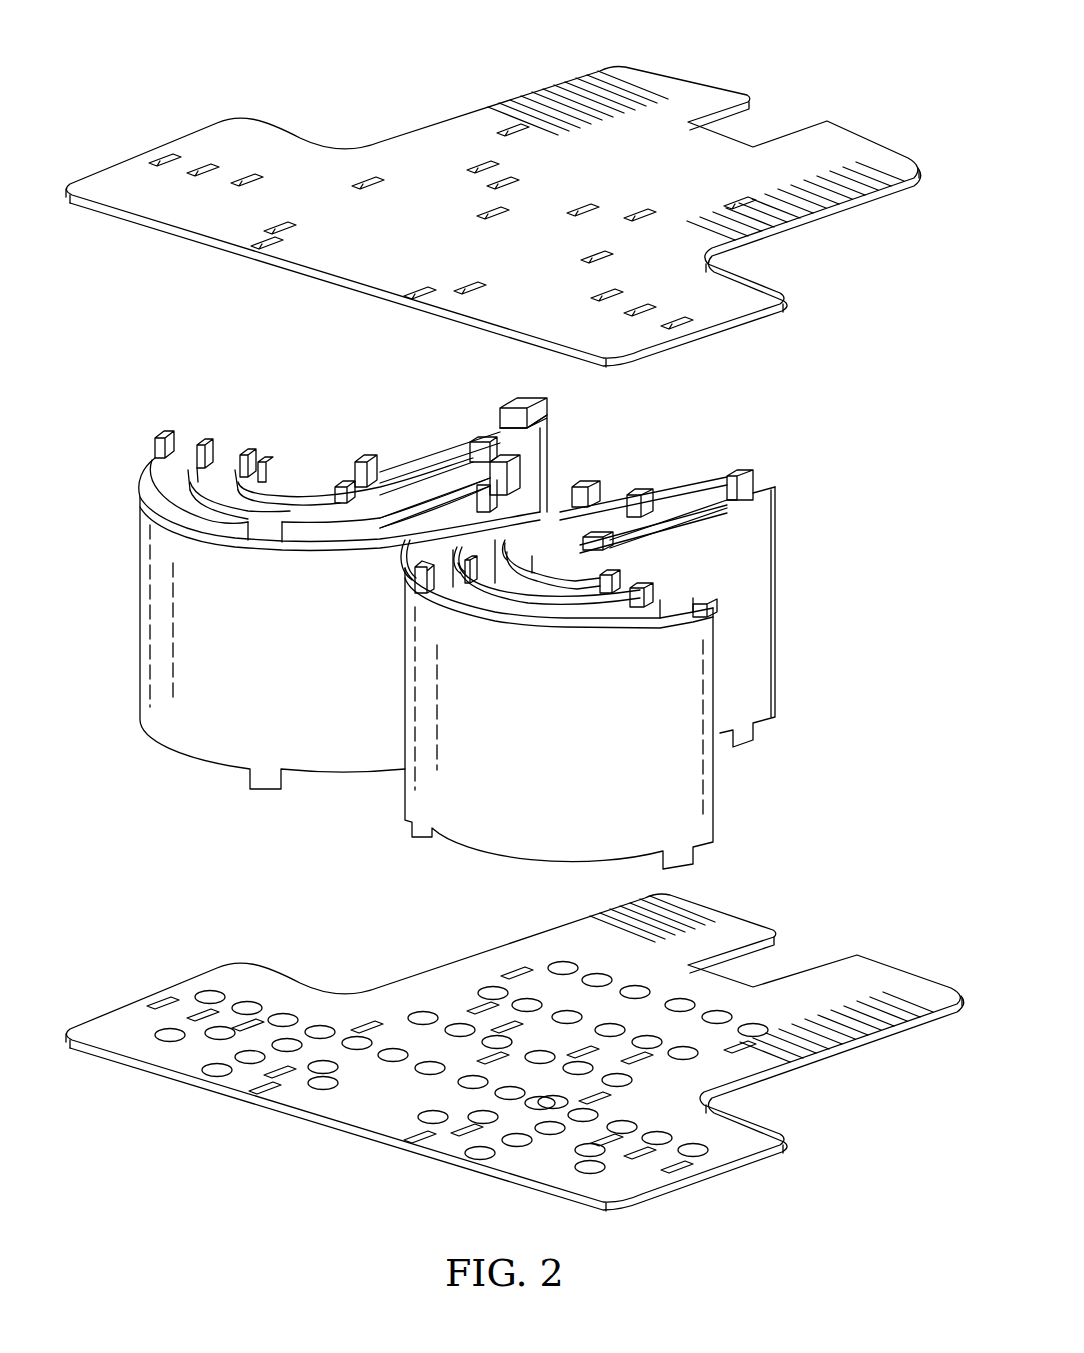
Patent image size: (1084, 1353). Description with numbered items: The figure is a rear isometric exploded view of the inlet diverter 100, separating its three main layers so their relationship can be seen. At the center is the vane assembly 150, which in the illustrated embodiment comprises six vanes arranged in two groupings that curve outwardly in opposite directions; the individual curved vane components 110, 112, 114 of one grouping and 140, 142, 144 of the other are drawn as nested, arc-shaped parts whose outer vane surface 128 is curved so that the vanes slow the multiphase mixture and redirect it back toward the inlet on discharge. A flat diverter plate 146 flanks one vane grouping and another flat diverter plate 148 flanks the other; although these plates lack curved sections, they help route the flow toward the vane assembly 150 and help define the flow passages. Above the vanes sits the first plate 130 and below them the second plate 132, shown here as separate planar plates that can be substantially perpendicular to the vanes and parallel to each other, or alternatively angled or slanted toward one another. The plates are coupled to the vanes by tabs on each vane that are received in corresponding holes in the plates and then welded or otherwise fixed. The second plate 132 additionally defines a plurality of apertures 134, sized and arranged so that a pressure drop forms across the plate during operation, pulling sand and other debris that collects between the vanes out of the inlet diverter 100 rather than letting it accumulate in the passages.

The inlet diverter 100 is at (232, 82).
The inner flange 110 is at (272, 468).
The middle flange 112 is at (240, 447).
The outer shell wall 114 is at (150, 630).
The outer vane surface 128 is at (305, 672).
The first plate 130 is at (447, 135).
The second plate 132 is at (880, 970).
The apertures 134 is at (249, 1002).
The flange 140 is at (620, 527).
The flange 142 is at (482, 603).
The shell wall 144 is at (407, 793).
The diverter plate 146 is at (540, 443).
The diverter plate 148 is at (765, 604).
The vane assembly 150 is at (119, 492).